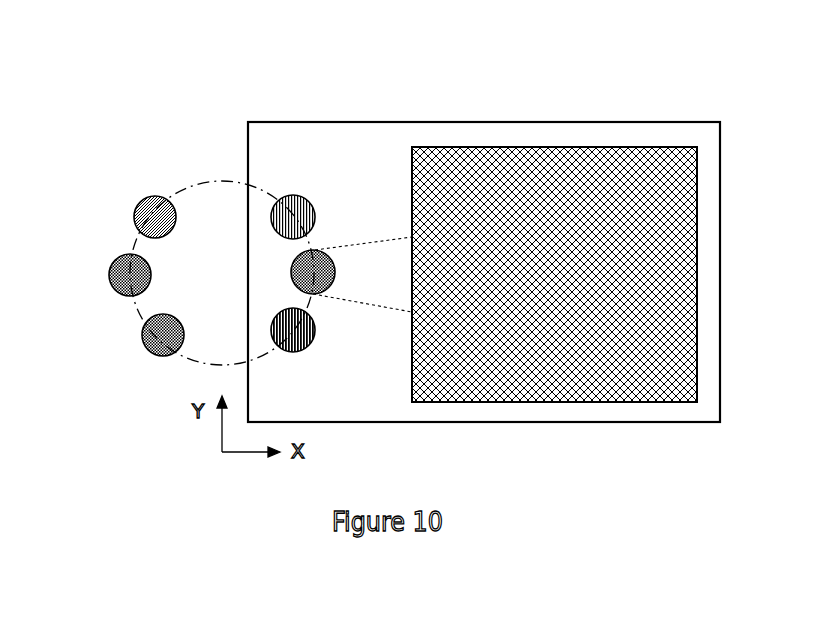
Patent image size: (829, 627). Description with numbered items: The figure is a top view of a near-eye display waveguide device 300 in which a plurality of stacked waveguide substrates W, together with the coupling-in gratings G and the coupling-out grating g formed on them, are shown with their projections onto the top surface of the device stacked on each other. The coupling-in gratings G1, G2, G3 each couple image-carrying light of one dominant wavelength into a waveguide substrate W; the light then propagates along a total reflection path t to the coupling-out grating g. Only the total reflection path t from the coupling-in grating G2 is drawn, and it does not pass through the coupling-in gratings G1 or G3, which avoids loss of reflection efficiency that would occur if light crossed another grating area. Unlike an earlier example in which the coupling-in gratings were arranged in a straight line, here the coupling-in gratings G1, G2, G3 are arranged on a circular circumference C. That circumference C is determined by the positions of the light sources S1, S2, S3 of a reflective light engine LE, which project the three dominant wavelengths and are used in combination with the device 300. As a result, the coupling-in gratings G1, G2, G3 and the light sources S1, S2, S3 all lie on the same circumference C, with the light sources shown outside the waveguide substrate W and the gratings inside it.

The near-eye display waveguide device 300 is at (405, 86).
The waveguide substrate W is at (510, 122).
The coupling-out grating g is at (630, 147).
The reflective light engine LE is at (133, 182).
The light source S1 is at (142, 330).
The light source S2 is at (116, 258).
The light source S3 is at (135, 210).
The circular circumference C is at (185, 362).
The coupling-in gratings G is at (291, 181).
The coupling-in grating G1 is at (298, 195).
The coupling-in grating G2 is at (315, 250).
The coupling-in grating G3 is at (303, 348).
The total reflection path t is at (368, 303).